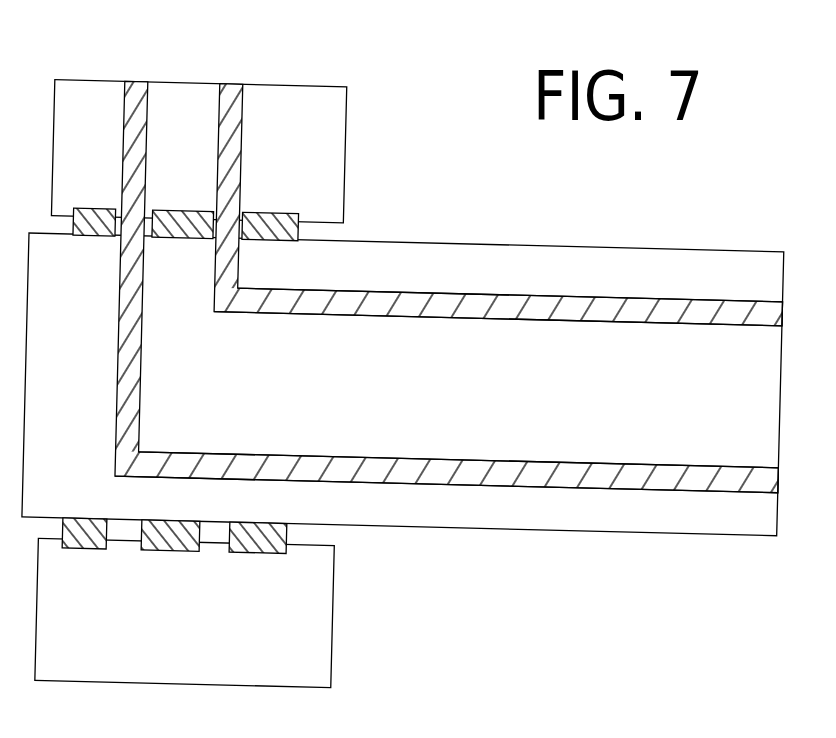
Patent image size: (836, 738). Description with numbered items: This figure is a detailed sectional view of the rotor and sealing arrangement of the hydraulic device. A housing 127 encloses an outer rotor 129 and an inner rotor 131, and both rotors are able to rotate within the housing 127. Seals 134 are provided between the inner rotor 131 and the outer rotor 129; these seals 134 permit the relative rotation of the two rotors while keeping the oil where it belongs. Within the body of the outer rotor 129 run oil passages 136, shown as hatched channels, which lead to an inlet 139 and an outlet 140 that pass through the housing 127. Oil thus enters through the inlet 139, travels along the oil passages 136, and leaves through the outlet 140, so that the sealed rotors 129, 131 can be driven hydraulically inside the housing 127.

The housing 127 is at (349, 132).
The outer rotor 129 is at (395, 270).
The inner rotor 131 is at (308, 662).
The seals 134 is at (268, 242).
The oil passages 136 is at (601, 299).
The inlet 139 is at (136, 82).
The outlet 140 is at (232, 83).